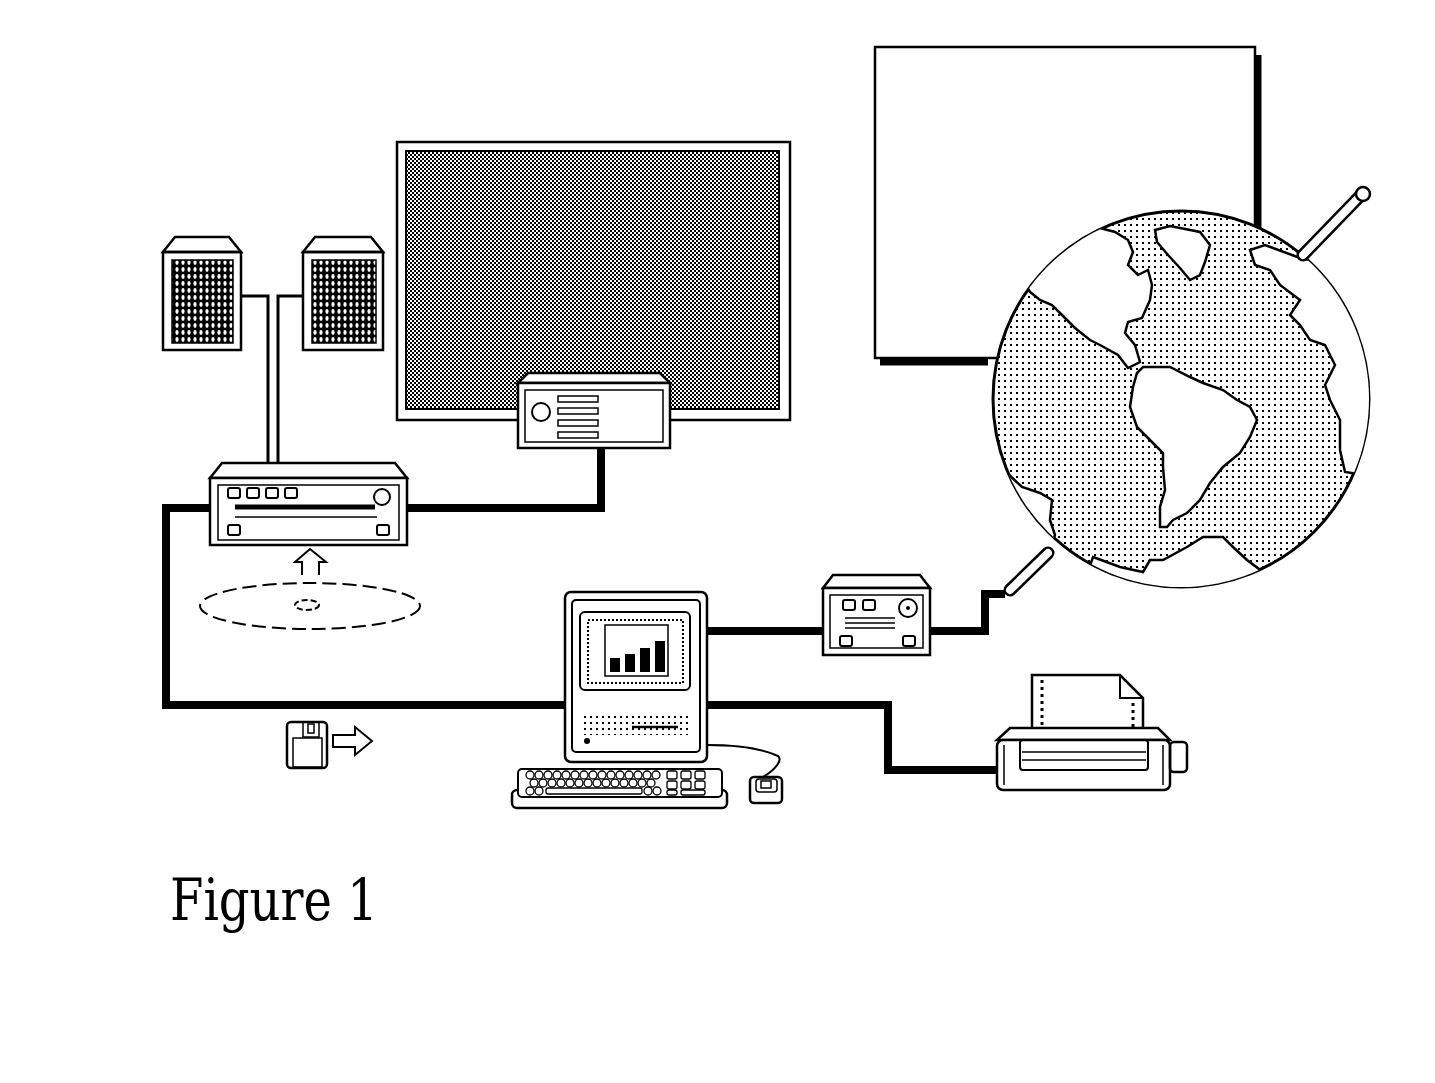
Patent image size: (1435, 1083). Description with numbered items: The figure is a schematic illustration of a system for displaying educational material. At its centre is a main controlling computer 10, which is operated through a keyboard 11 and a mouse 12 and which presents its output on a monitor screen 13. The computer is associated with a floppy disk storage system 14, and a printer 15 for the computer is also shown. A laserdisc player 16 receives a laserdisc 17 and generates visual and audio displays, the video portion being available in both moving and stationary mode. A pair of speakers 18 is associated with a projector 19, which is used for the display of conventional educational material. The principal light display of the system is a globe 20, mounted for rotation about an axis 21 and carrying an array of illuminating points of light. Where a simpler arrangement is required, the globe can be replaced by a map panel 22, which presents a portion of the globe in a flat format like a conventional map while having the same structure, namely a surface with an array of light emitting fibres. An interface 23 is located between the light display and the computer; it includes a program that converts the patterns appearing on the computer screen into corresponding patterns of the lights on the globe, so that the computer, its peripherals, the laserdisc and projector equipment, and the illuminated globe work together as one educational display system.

The main controlling computer 10 is at (565, 651).
The keyboard 11 is at (515, 769).
The mouse 12 is at (783, 790).
The monitor screen 13 is at (626, 640).
The floppy disk storage system 14 is at (303, 752).
The printer 15 is at (1092, 732).
The laserdisc player 16 is at (355, 468).
The laserdisc 17 is at (385, 590).
The pair of speakers 18 is at (342, 240).
The projector 19 is at (593, 295).
The globe 20 is at (1187, 396).
The axis 21 is at (1035, 570).
The map panel 22 is at (1066, 204).
The interface 23 is at (880, 636).